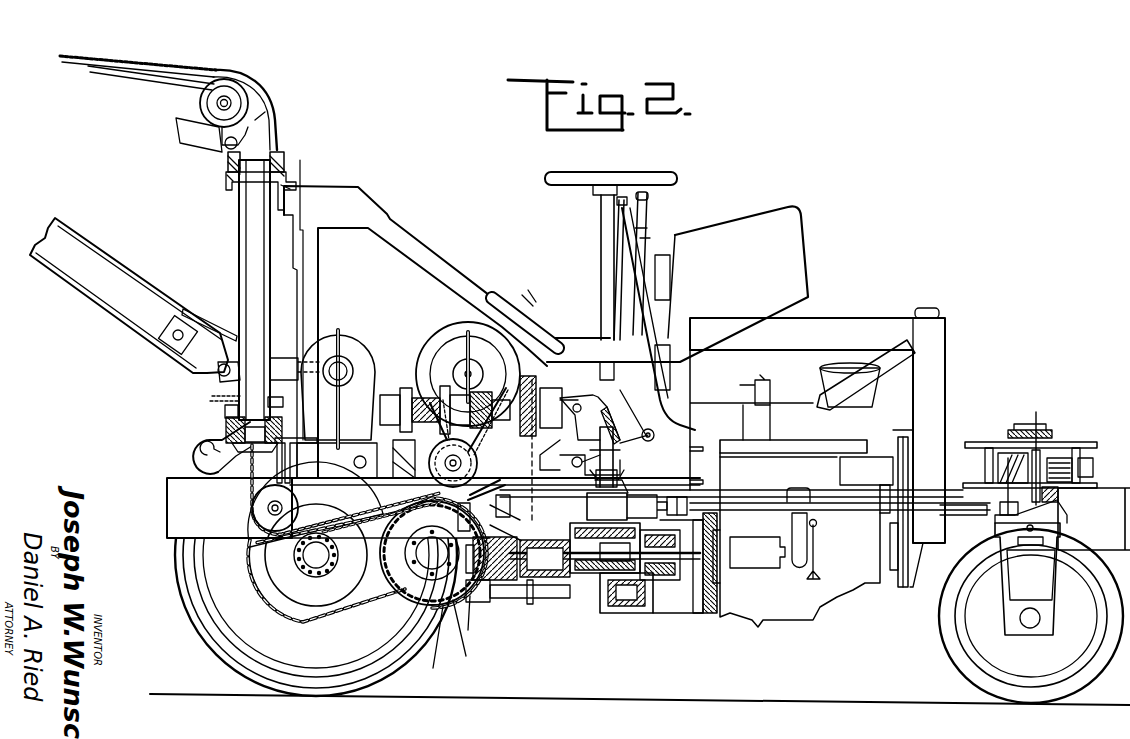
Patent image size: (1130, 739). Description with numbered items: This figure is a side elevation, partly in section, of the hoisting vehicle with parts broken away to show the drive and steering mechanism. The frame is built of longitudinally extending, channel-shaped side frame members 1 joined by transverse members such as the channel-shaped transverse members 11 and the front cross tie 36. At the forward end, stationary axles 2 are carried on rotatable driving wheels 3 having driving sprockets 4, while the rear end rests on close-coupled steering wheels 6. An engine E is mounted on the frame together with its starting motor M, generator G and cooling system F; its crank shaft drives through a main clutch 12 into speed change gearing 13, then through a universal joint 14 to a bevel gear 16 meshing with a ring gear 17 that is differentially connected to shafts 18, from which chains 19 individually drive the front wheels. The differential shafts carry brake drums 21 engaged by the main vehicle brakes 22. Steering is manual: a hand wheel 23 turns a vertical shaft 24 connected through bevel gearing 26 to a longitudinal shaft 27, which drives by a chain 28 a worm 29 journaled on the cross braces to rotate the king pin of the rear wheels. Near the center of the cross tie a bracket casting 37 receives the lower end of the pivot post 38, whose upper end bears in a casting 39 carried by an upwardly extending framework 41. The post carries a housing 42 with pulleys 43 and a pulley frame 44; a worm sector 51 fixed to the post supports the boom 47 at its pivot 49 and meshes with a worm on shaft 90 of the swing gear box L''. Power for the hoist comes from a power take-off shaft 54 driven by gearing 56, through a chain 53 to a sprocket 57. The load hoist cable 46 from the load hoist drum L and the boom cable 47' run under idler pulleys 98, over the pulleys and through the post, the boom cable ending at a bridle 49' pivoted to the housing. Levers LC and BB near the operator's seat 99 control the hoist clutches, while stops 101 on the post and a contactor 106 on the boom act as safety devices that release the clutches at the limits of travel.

The side frame members 1 is at (1094, 519).
The stationary axles 2 is at (311, 557).
The driving wheels 3 is at (316, 555).
The driving sprockets 4 is at (370, 588).
The steering wheels 6 is at (1031, 601).
The transverse members 11 is at (968, 446).
The main clutch 12 is at (697, 613).
The speed change gearing 13 is at (560, 580).
The universal joint 14 is at (545, 580).
The bevel gear 16 is at (488, 582).
The ring gear 17 is at (468, 624).
The differential shafts 18 is at (432, 553).
The chains 19 is at (377, 604).
The brake drums 21 is at (465, 638).
The main vehicle brakes 22 is at (429, 646).
The hand wheel 23 is at (575, 185).
The vertical shaft 24 is at (601, 268).
The bevel gearing 26 is at (590, 505).
The shaft 27 is at (750, 510).
The chain 28 is at (998, 478).
The worm 29 is at (1016, 440).
The cross tie 36 is at (290, 462).
The bracket casting 37 is at (226, 443).
The pivot post 38 is at (254, 290).
The casting 39 is at (287, 178).
The framework 41 is at (447, 319).
The housing 42 is at (277, 150).
The pulleys 43 is at (201, 97).
The pulley frame 44 is at (247, 76).
The load hoist cable 46 is at (118, 60).
The boom 47 is at (129, 295).
The boom cable 47' is at (196, 93).
The boom pivot 49 is at (195, 391).
The bridle 49' is at (173, 132).
The worm sector 51 is at (284, 358).
The chain 53 is at (533, 515).
The power take-off shaft 54 is at (553, 600).
The gearing 56 is at (622, 613).
The sprocket 57 is at (573, 408).
The shaft 90 is at (342, 366).
The idler pulleys 98 is at (290, 520).
The operator's seat 99 is at (677, 284).
The stops 101 is at (228, 418).
The contactor 106 is at (226, 330).
The load hoist drum L is at (473, 374).
The gear box L'' is at (338, 375).
The lever LC is at (646, 206).
The lever BB is at (622, 280).
The cooling system F is at (817, 447).
The generator G is at (866, 485).
The engine E is at (814, 483).
The starting motor M is at (757, 552).